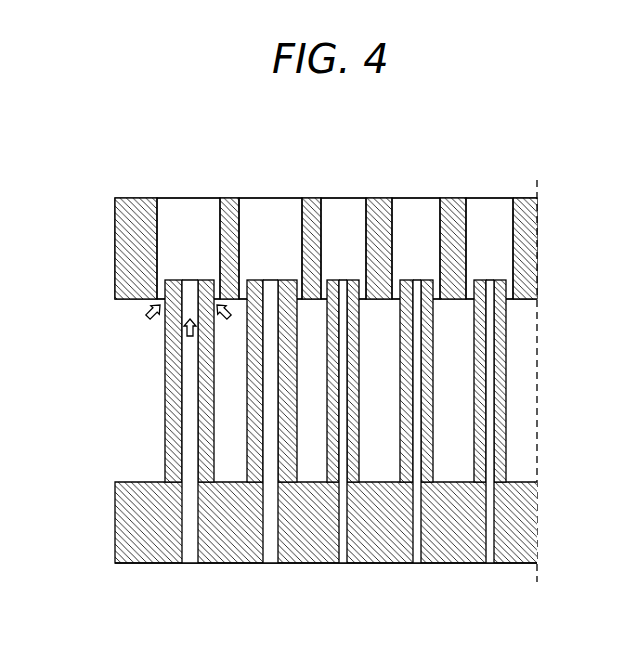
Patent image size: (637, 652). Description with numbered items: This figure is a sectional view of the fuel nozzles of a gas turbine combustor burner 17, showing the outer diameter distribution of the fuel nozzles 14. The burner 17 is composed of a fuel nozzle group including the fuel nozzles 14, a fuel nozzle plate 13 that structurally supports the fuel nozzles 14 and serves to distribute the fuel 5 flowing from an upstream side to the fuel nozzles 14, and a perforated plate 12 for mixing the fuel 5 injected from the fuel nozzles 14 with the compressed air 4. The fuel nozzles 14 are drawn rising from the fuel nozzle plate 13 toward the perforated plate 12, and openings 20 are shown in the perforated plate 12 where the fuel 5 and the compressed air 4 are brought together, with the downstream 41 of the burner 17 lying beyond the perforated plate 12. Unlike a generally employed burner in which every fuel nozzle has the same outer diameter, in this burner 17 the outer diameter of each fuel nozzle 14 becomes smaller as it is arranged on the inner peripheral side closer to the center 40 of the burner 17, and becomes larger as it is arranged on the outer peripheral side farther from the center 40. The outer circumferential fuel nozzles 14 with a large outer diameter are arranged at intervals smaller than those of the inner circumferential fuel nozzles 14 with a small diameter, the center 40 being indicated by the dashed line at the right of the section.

The compressed air 4 is at (147, 316).
The fuel 5 is at (182, 328).
The perforated plate 12 is at (131, 207).
The fuel nozzle plate 13 is at (115, 518).
The fuel nozzle 14 is at (165, 443).
The burner 17 is at (443, 163).
The opening 20 is at (190, 207).
The center of the burner 40 is at (537, 188).
The downstream of the burner 41 is at (338, 197).